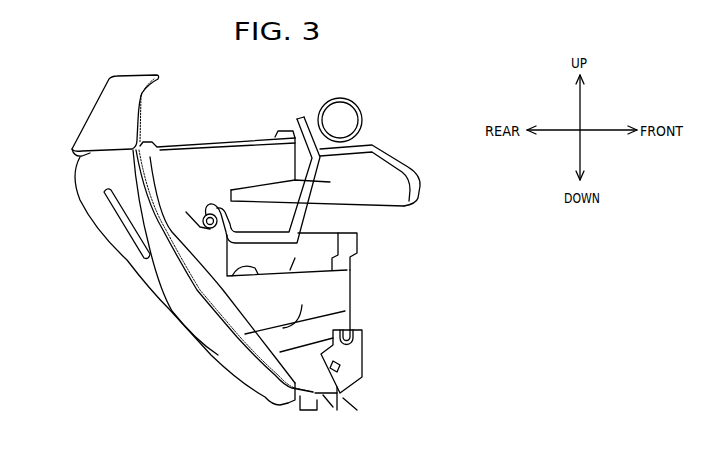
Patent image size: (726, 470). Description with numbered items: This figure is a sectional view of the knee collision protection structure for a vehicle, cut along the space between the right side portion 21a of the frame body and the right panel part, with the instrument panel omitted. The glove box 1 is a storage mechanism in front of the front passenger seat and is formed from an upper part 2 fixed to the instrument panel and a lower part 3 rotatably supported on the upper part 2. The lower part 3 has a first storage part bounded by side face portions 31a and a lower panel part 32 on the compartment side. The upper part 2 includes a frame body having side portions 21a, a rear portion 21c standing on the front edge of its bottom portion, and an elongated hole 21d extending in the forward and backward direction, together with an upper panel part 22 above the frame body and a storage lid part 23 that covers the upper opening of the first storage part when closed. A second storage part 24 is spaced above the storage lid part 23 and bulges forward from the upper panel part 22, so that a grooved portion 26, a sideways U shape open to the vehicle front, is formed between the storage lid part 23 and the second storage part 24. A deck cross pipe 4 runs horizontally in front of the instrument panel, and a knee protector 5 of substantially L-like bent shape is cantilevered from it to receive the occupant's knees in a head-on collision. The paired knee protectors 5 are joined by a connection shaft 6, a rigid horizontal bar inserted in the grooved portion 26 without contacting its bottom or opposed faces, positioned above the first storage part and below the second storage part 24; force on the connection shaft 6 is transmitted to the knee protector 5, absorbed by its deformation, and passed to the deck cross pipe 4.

The glove box 1 is at (62, 267).
The upper part 2 is at (387, 142).
The lower part 3 is at (250, 390).
The deck cross pipe 4 is at (348, 97).
The knee protector 5 is at (300, 118).
The connection shaft 6 is at (198, 218).
The side portion 21a is at (283, 328).
The rear portion 21c is at (352, 315).
The elongated hole 21d is at (248, 284).
The upper panel part 22 is at (98, 105).
The storage lid part 23 is at (306, 238).
The second storage part 24 is at (397, 177).
The grooved portion 26 is at (355, 222).
The side face portion 31a is at (295, 258).
The lower panel part 32 is at (152, 281).